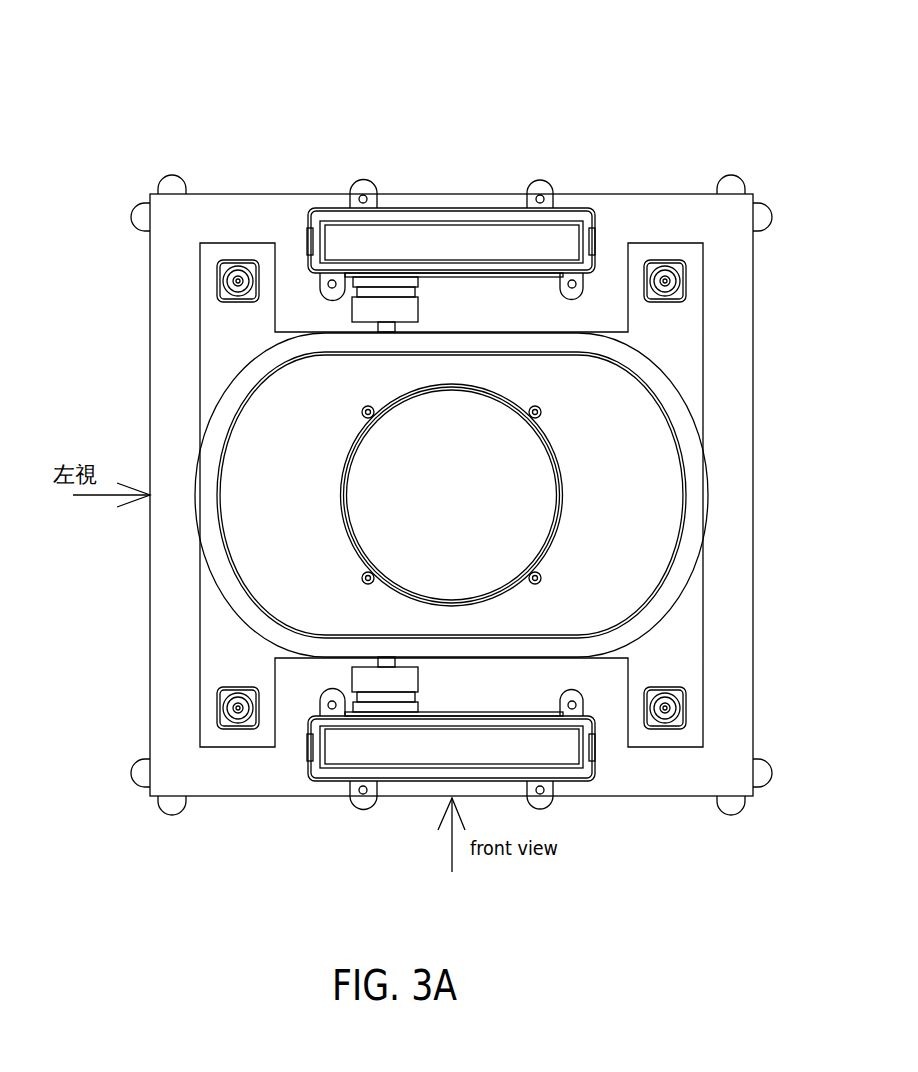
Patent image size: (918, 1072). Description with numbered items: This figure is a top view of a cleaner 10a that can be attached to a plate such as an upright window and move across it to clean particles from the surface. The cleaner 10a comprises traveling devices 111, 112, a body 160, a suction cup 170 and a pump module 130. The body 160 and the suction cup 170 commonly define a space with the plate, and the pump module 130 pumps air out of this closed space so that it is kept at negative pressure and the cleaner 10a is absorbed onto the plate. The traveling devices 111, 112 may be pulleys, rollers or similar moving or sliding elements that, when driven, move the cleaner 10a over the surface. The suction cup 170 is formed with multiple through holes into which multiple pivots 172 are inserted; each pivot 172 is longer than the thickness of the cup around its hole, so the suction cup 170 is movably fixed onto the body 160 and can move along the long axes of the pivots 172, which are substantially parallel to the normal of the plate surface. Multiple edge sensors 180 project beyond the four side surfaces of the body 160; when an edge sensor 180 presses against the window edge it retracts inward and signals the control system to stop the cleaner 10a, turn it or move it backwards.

The cleaner 10a is at (754, 50).
The traveling device 111 is at (452, 235).
The traveling device 112 is at (388, 757).
The pump module 130 is at (362, 497).
The body 160 is at (245, 215).
The suction cup 170 is at (663, 258).
The pivot 172 is at (232, 281).
The edge sensor 180 is at (172, 186).